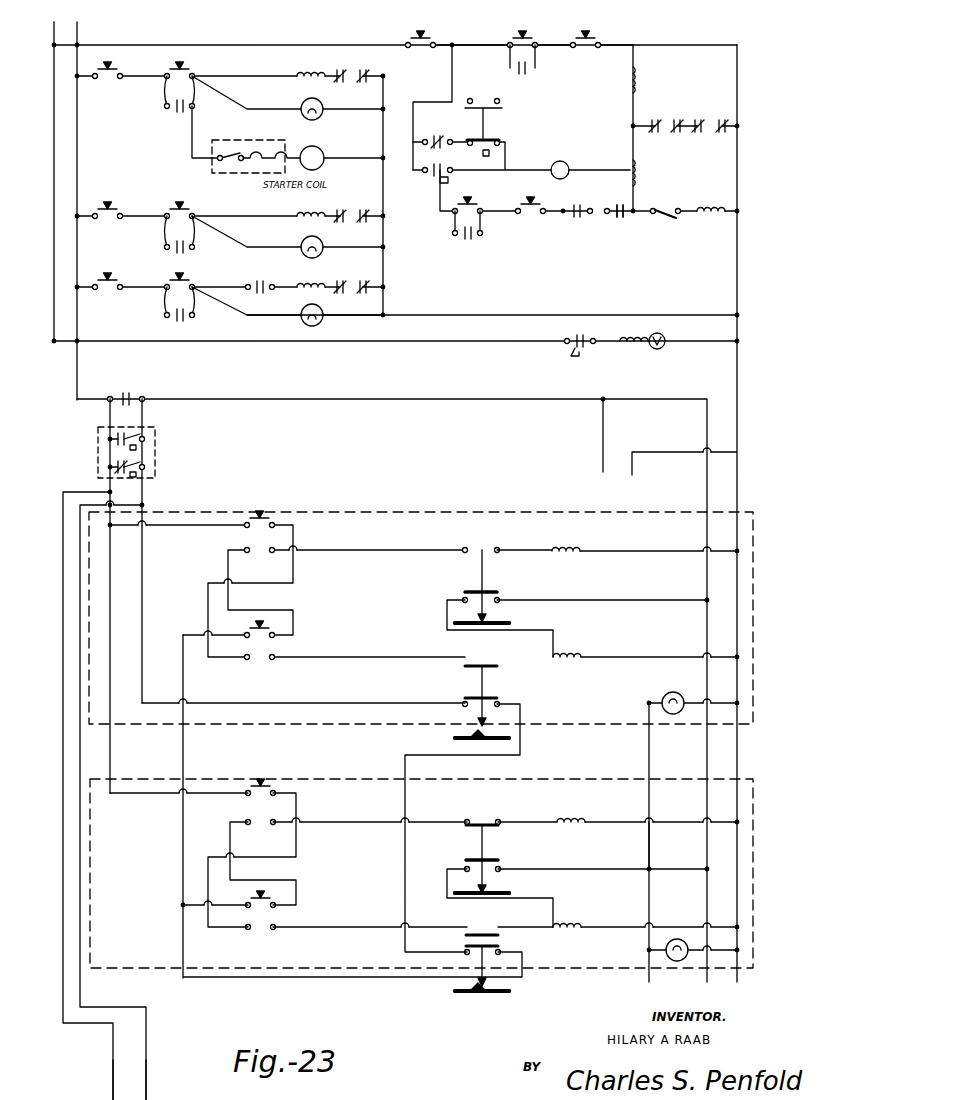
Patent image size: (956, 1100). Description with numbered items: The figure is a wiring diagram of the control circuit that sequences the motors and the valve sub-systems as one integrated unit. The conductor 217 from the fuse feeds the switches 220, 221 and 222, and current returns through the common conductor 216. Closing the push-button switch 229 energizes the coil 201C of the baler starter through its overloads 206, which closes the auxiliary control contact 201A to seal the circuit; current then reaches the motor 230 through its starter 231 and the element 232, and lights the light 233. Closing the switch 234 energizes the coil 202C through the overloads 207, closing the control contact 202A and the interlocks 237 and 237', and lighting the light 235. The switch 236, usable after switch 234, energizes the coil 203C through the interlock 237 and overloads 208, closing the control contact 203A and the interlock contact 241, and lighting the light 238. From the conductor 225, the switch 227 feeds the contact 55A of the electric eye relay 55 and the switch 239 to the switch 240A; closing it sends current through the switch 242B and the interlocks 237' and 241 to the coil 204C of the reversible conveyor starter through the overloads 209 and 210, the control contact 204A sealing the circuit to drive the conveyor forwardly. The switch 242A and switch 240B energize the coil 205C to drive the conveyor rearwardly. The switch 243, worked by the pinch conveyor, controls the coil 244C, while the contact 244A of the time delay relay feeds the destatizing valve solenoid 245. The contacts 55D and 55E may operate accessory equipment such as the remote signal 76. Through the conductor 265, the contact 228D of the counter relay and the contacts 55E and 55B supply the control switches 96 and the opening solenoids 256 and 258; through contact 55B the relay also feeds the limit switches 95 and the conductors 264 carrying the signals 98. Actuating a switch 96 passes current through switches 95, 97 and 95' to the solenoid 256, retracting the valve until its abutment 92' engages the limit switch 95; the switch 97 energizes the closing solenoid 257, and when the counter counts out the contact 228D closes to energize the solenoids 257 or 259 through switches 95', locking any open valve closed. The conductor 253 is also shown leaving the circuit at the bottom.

The conductor 217 is at (77, 40).
The conductor 225 is at (228, 46).
The conductor 216 is at (383, 267).
The switch 220 is at (110, 92).
The switch 229 is at (156, 66).
The coil 201C is at (323, 72).
The overloads 206 is at (358, 70).
The auxiliary control contact 201A is at (170, 112).
The light 233 is at (302, 103).
The starter 231 is at (230, 137).
The starter element 232 is at (270, 160).
The motor 230 is at (323, 135).
The switch 221 is at (110, 232).
The switch 234 is at (156, 206).
The coil 202C is at (307, 215).
The overloads 207 is at (358, 210).
The auxiliary control contact 202A is at (170, 251).
The light 235 is at (302, 238).
The switch 222 is at (106, 304).
The switch 236 is at (194, 275).
The interlock 237 is at (244, 298).
The coil 203C is at (307, 286).
The overloads 208 is at (358, 281).
The auxiliary control contact 203A is at (170, 320).
The light 238 is at (322, 320).
The switch 227 is at (432, 36).
The switch 242A is at (536, 34).
The switch 240B is at (596, 36).
The coil 205C is at (640, 80).
The overloads 209 is at (670, 110).
The overloads 210 is at (716, 120).
The coil 204C is at (640, 168).
The contact 55A is at (432, 134).
The contact 55D is at (428, 176).
The switch 239 is at (488, 115).
The remote signal 76 is at (560, 161).
The switch 240A is at (479, 202).
The auxiliary control contact 204A is at (462, 238).
The switch 242B is at (513, 212).
The auxiliary control contact 241 is at (607, 206).
The interlock 237' is at (595, 228).
The switch 243 is at (672, 194).
The coil 244C is at (729, 194).
The contact 244A is at (578, 335).
The destatizing valve solenoid 245 is at (656, 329).
The conductor 265 is at (440, 395).
The contact 228D is at (128, 392).
The electric eye relay 55 is at (155, 448).
The contact 55E is at (142, 436).
The contact 55B is at (142, 466).
The control switch 96 is at (238, 808).
The switch 97 is at (288, 918).
The limit switch 95' is at (471, 701).
The abutment 92' is at (503, 794).
The limit switch 95 is at (501, 810).
The opening solenoid 256 is at (562, 547).
The solenoid 257 is at (573, 662).
The signal 98 is at (673, 692).
The opening solenoid 258 is at (567, 818).
The conductor 264 is at (649, 846).
The solenoid 259 is at (566, 923).
The conductor 253 is at (146, 1040).